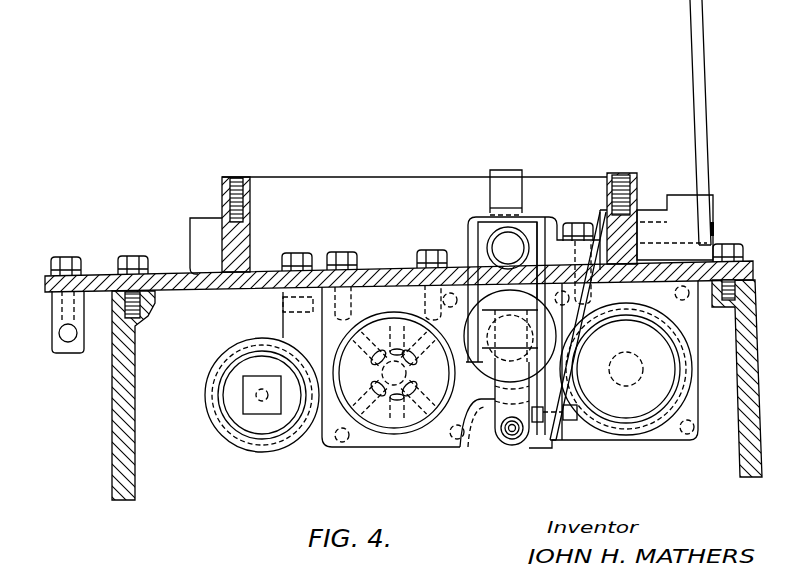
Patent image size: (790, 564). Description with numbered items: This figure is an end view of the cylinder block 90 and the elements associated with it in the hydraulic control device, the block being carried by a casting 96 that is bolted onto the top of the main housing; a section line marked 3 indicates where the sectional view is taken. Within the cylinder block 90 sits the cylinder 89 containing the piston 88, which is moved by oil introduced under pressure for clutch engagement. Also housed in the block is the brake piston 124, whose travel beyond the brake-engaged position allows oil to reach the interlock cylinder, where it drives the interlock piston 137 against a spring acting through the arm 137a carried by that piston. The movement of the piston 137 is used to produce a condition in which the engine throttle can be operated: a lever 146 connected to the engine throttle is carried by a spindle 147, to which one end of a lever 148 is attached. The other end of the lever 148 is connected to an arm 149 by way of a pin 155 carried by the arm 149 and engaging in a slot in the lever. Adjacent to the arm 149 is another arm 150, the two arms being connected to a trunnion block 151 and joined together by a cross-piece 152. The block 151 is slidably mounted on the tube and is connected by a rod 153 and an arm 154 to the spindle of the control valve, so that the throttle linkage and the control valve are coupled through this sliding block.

The casting 96 is at (228, 240).
The cylinder block 90 is at (685, 310).
The lever 146 is at (700, 48).
The spindle 147 is at (715, 232).
The lever 148 is at (581, 324).
The arm 149 is at (542, 233).
The arm 150 is at (477, 270).
The trunnion block 151 is at (528, 225).
The cross-piece 152 is at (483, 318).
The rod 153 is at (498, 194).
The arm 154 is at (518, 170).
The pin 155 is at (567, 440).
The piston 88 is at (373, 343).
The cylinder 89 is at (397, 432).
The piston 137 is at (336, 442).
The arm 137a is at (502, 398).
The piston 124 is at (652, 427).
The section line 3- 3 is at (506, 172).